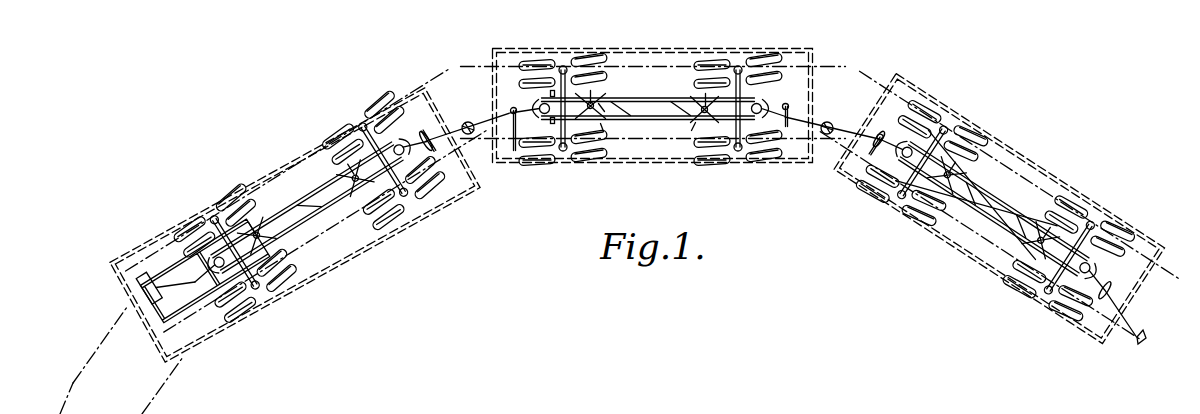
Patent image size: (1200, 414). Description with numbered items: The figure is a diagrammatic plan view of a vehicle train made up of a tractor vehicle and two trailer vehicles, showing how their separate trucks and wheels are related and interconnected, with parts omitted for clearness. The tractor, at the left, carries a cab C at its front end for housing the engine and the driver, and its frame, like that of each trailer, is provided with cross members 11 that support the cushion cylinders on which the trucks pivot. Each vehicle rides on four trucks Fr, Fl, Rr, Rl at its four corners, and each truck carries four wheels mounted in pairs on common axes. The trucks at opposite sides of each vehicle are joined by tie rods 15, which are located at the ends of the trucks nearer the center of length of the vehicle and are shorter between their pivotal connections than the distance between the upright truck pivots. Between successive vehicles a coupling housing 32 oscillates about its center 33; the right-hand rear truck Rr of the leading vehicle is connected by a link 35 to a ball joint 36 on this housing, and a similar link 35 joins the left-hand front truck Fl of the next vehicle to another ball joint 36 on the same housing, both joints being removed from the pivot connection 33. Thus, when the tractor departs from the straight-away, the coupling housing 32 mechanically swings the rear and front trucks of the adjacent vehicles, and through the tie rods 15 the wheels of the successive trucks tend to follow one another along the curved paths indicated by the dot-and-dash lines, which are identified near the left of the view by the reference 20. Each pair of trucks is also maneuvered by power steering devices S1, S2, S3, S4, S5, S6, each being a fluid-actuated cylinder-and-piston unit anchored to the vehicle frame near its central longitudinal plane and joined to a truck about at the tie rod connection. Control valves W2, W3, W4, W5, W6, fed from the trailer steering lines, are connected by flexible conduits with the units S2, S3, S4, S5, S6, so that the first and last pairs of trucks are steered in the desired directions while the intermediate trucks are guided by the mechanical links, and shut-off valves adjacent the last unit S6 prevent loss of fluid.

The cab C is at (147, 250).
The cross members 11 is at (393, 216).
The tie rods 15 is at (652, 97).
The track 20 is at (85, 398).
The coupling housing 32 is at (468, 136).
The center of oscillation 33 is at (512, 106).
The link 35 is at (513, 148).
The ball joint 36 is at (808, 127).
The right-hand front truck Fr is at (563, 67).
The left-hand front truck Fl is at (563, 152).
The right-hand rear truck Rr is at (738, 67).
The left-hand rear truck Rl is at (738, 152).
The power steering device S1 is at (248, 222).
The power steering device S2 is at (355, 190).
The power steering device S3 is at (594, 97).
The power steering device S4 is at (656, 118).
The power steering device S5 is at (960, 161).
The power steering device S6 is at (1045, 228).
The control valve W2 is at (314, 190).
The control valve W3 is at (633, 106).
The control valve W4 is at (677, 106).
The control valve W5 is at (988, 192).
The control valve W6 is at (1009, 231).